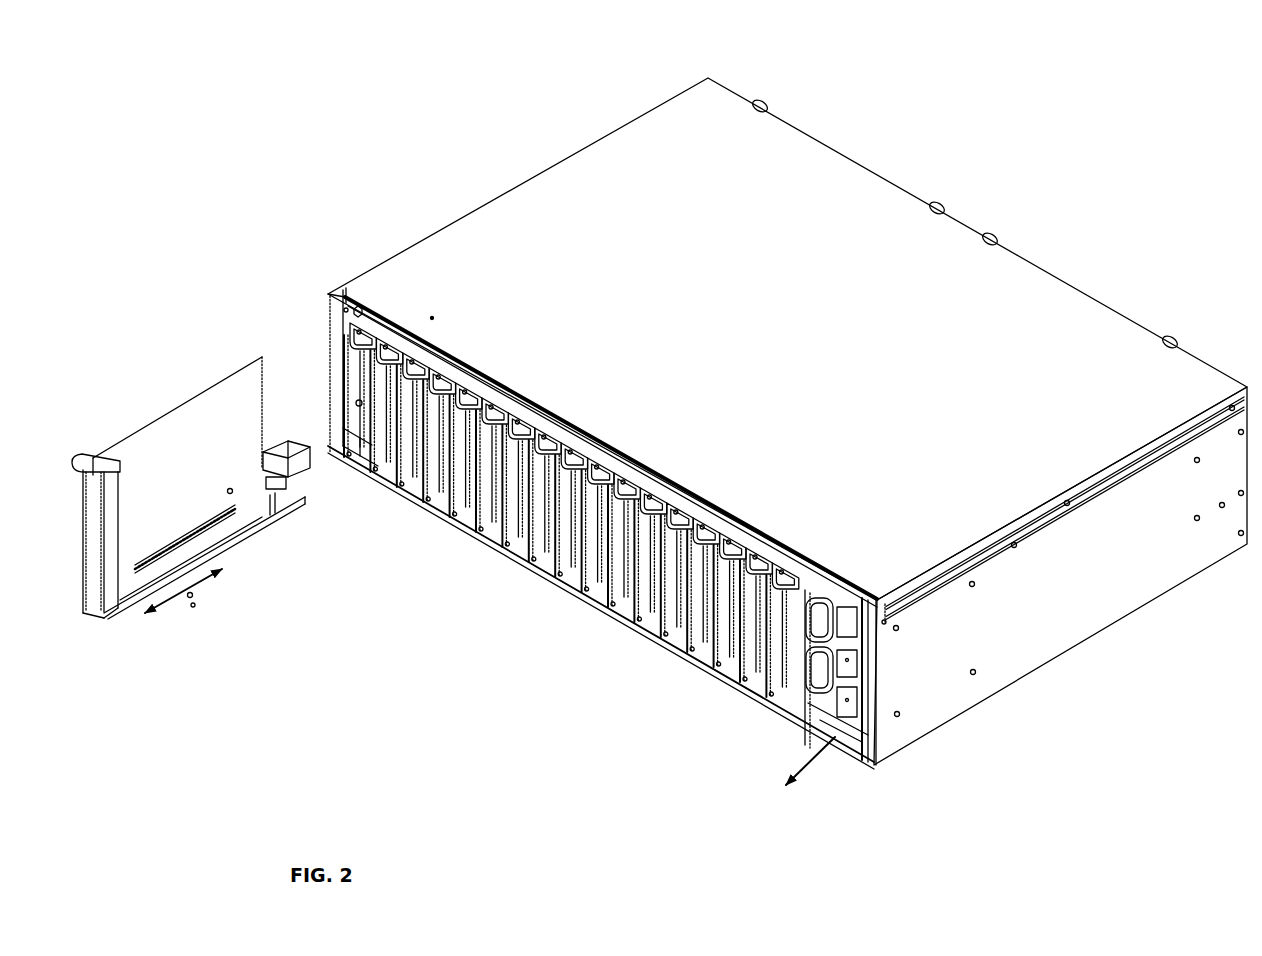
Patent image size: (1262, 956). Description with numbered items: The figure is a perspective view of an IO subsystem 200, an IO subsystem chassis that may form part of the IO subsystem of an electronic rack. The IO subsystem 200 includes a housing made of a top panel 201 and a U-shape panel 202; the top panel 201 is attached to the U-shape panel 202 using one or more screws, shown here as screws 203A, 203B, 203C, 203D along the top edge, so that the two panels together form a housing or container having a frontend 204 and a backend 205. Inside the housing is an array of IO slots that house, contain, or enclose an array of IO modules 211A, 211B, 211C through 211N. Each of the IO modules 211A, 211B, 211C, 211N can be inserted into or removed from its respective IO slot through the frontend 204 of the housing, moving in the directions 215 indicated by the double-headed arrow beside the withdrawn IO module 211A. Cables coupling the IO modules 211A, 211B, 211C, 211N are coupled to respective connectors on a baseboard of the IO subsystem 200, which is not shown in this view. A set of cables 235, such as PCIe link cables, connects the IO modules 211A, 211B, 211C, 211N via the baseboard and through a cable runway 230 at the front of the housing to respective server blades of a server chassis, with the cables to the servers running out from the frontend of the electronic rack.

The IO subsystem 200 is at (228, 166).
The top panel 201 is at (575, 190).
The U-shape panel 202 is at (1053, 628).
The screw 203A is at (762, 100).
The screw 203B is at (942, 205).
The screw 203C is at (995, 235).
The screw 203D is at (1174, 340).
The frontend 204 is at (420, 628).
The backend 205 is at (945, 122).
The IO module 211A is at (178, 386).
The IO module 211B is at (378, 457).
The IO module 211C is at (402, 482).
The IO module 211N is at (800, 702).
The directions 215 is at (183, 592).
The cable runway 230 is at (848, 738).
The cables 235 is at (763, 804).